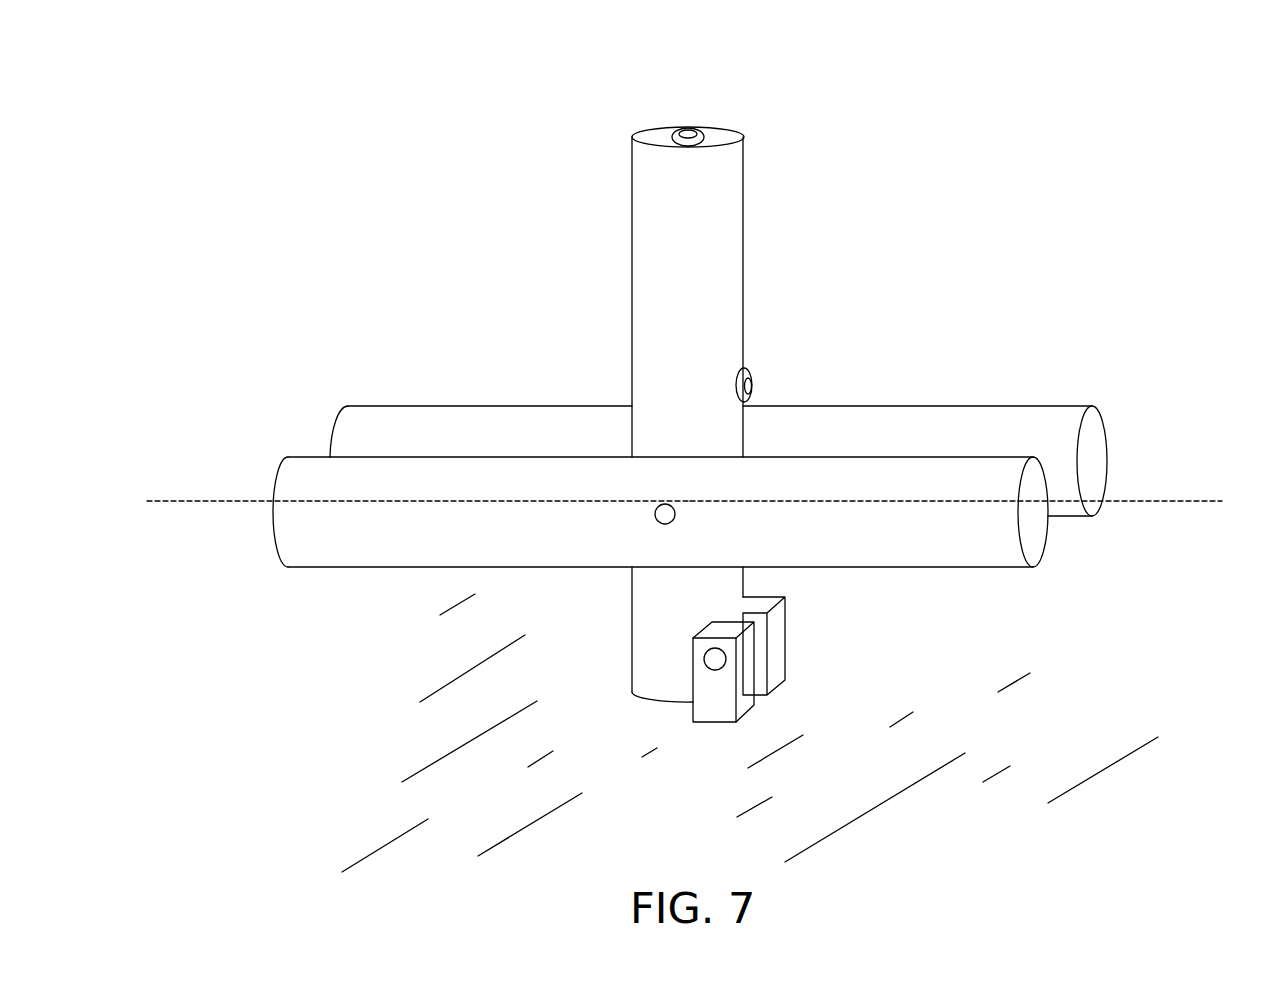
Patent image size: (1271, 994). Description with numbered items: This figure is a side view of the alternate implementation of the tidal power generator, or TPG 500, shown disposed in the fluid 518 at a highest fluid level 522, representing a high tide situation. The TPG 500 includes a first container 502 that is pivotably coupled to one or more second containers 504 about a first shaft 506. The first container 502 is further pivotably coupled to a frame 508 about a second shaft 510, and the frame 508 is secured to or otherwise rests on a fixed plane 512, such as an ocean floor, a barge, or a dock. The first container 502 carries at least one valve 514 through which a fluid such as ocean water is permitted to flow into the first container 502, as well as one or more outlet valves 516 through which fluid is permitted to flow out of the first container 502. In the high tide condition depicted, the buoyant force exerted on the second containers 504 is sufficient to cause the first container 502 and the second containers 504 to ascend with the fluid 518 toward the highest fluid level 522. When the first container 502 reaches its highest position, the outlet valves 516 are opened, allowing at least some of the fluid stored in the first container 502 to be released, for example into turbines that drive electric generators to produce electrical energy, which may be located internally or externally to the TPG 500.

The TPG 500 is at (412, 199).
The first container 502 is at (672, 243).
The second containers 504 is at (440, 436).
The first shaft 506 is at (652, 518).
The frame 508 is at (800, 650).
The second shaft 510 is at (697, 655).
The fixed plane 512 is at (393, 736).
The valve 514 is at (706, 124).
The outlet valves 516 is at (756, 379).
The fluid 518 is at (193, 549).
The highest fluid level 522 is at (1148, 500).